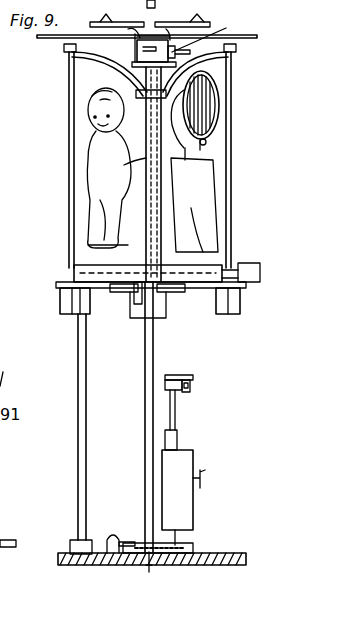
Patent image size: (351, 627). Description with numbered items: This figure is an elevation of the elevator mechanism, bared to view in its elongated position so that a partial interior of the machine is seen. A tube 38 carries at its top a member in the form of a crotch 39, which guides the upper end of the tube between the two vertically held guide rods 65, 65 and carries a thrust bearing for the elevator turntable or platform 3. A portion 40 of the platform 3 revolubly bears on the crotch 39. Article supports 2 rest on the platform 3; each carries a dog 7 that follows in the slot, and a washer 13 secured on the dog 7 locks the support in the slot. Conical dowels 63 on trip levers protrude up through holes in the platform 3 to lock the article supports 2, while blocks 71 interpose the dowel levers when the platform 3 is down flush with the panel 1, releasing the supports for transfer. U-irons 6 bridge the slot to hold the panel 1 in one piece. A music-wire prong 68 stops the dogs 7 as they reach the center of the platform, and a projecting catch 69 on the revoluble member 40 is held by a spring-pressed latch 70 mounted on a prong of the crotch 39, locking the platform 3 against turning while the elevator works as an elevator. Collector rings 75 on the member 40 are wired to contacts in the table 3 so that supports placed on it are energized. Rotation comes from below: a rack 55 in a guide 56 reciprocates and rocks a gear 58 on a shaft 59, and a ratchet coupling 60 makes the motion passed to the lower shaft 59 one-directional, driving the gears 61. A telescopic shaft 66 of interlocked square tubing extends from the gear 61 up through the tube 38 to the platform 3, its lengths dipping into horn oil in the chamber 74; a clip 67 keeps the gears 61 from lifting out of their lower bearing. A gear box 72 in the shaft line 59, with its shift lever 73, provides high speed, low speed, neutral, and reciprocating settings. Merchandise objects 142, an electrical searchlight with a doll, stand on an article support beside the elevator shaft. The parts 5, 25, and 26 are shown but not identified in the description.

The panel 1 is at (60, 299).
The article supports 2 is at (74, 270).
The elevator turntable platform 3 is at (153, 26).
The plate 5 is at (60, 284).
The U-irons 6 is at (130, 318).
The dogs 7 is at (133, 305).
The washers 13 is at (133, 295).
The base 25 is at (110, 568).
The rod 26 is at (78, 345).
The tube 38 is at (147, 155).
The crotch member 39 is at (115, 68).
The revoluble member of platform 40 is at (64, 48).
The rack 55 is at (190, 384).
The guide 56 is at (186, 392).
The gear 58 is at (171, 401).
The shaft 59 is at (172, 375).
The ratchet coupling 60 is at (178, 441).
The gears 61 is at (150, 568).
The conical dowels 63 is at (202, 22).
The guide rods 65 is at (69, 117).
The telescopic shaft 66 is at (145, 345).
The clip 67 is at (128, 538).
The music-wire prong 68 is at (140, 50).
The projecting catch 69 is at (210, 35).
The latch 70 is at (175, 62).
The blocks 71 is at (172, 296).
The gear box 72 is at (194, 462).
The shift lever 73 is at (201, 480).
The chamber 74 is at (190, 545).
The collector rings 75 is at (135, 92).
The merchandise objects 142 is at (116, 168).